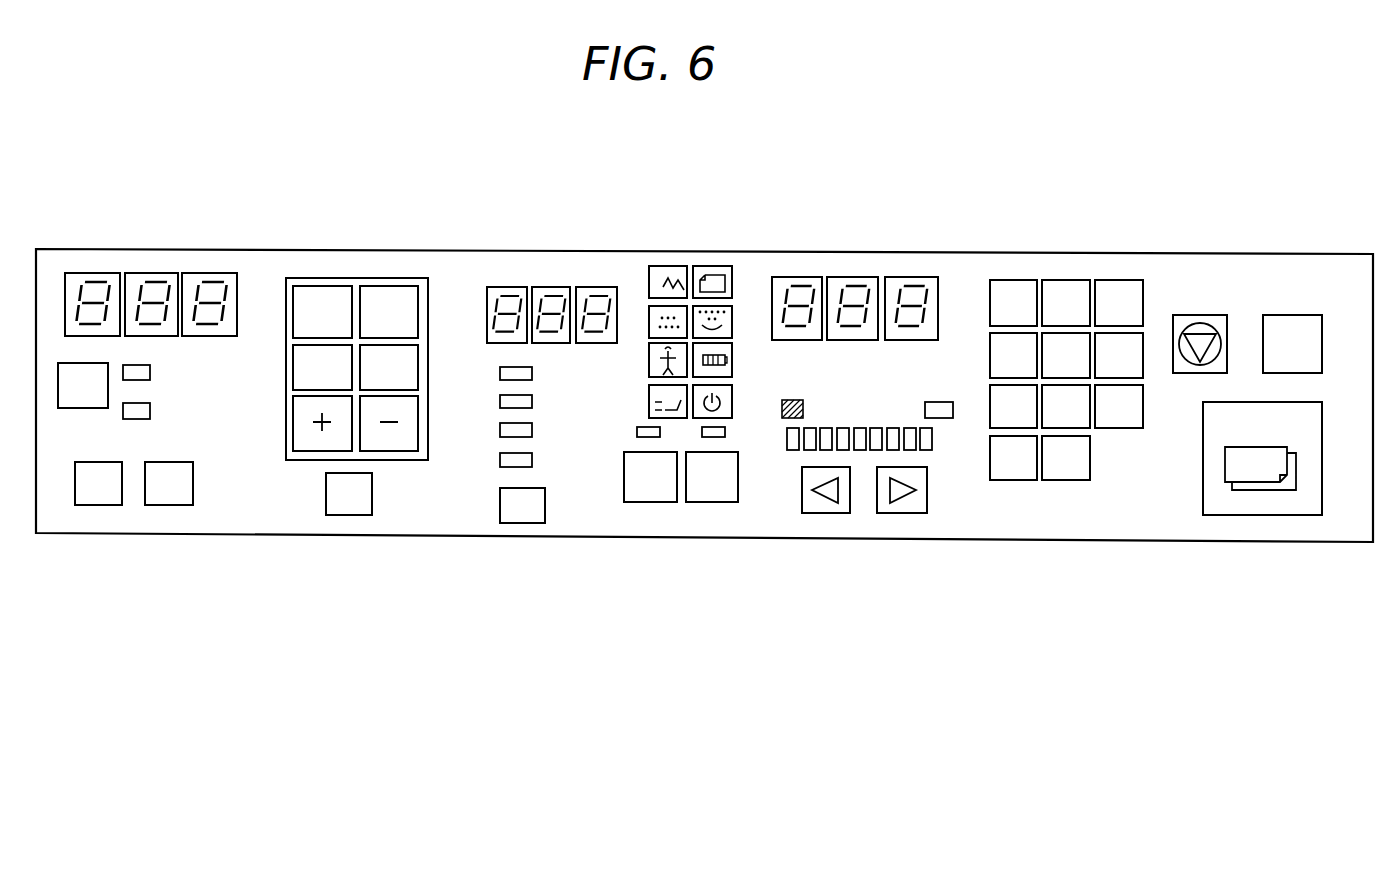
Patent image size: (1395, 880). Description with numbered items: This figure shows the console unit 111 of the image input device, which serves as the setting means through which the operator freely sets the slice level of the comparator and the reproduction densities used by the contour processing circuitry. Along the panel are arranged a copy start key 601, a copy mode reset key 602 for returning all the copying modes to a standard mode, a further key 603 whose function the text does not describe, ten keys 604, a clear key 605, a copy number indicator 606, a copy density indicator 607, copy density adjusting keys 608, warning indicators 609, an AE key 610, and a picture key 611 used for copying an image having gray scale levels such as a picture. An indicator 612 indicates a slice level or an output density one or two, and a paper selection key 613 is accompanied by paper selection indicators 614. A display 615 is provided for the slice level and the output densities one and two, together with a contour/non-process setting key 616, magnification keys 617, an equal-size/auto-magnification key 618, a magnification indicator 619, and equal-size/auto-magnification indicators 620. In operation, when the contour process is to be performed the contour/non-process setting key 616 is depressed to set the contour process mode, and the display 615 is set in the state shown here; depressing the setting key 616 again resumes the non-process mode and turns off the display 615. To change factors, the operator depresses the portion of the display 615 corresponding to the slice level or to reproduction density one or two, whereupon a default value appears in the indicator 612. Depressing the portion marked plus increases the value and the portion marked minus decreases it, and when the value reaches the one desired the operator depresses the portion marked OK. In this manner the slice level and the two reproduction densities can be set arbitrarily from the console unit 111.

The console unit 111 is at (977, 162).
The copy start key 601 is at (1290, 515).
The copy mode reset key 602 is at (1290, 315).
The stop key 603 is at (1205, 315).
The ten keys 604 is at (1070, 280).
The clear key 605 is at (1068, 480).
The copy number indicator 606 is at (852, 277).
The copy density indicator 607 is at (935, 447).
The copy density adjusting keys 608 is at (840, 513).
The warning indicators 609 is at (710, 266).
The AE key 610 is at (720, 502).
The picture key 611 is at (648, 502).
The indicator 612 is at (555, 287).
The paper selection key 613 is at (525, 523).
The paper selection indicators 614 is at (500, 363).
The display 615 is at (370, 278).
The contour/non-process setting key 616 is at (350, 515).
The magnification keys 617 is at (100, 505).
The equal-size/auto-magnification key 618 is at (88, 408).
The magnification indicator 619 is at (152, 272).
The equal-size/auto-magnification indicators 620 is at (150, 366).